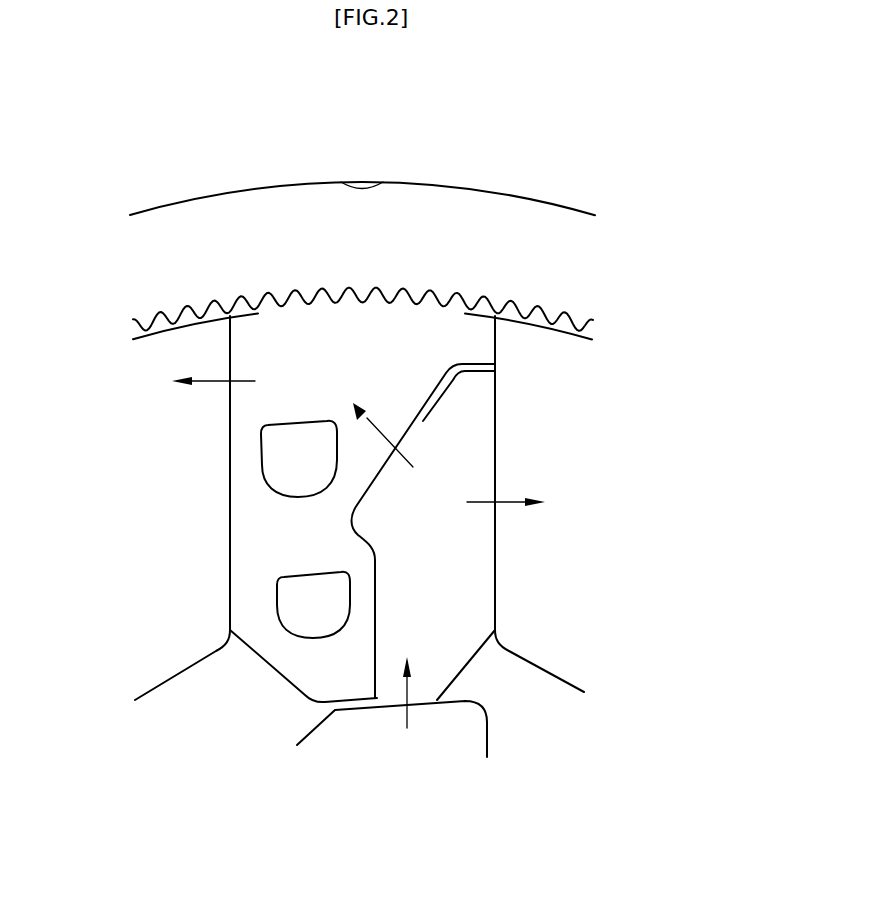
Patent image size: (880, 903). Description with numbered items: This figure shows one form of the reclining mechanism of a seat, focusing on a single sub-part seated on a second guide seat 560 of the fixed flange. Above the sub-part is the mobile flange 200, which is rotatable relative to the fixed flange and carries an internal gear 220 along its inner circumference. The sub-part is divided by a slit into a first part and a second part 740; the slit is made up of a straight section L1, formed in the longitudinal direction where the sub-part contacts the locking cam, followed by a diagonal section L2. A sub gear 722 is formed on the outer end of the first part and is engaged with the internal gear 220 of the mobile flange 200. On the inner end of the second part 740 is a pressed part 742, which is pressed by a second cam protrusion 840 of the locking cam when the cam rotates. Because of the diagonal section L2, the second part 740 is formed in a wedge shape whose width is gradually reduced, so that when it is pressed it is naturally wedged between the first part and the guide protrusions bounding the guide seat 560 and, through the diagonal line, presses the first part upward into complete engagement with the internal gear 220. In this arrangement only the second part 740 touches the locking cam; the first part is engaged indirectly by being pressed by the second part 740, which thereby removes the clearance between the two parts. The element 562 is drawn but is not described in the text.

The mobile flange 200 is at (438, 205).
The internal gear 220 is at (484, 298).
The sub gear 722 is at (321, 287).
The side wall 562 is at (230, 426).
The second guide seat 560 is at (259, 654).
The second part 740 is at (458, 591).
The pressed part 742 is at (420, 705).
The second cam protrusion 840 is at (475, 733).
The straight section L1 is at (377, 652).
The diagonal section L2 is at (423, 417).